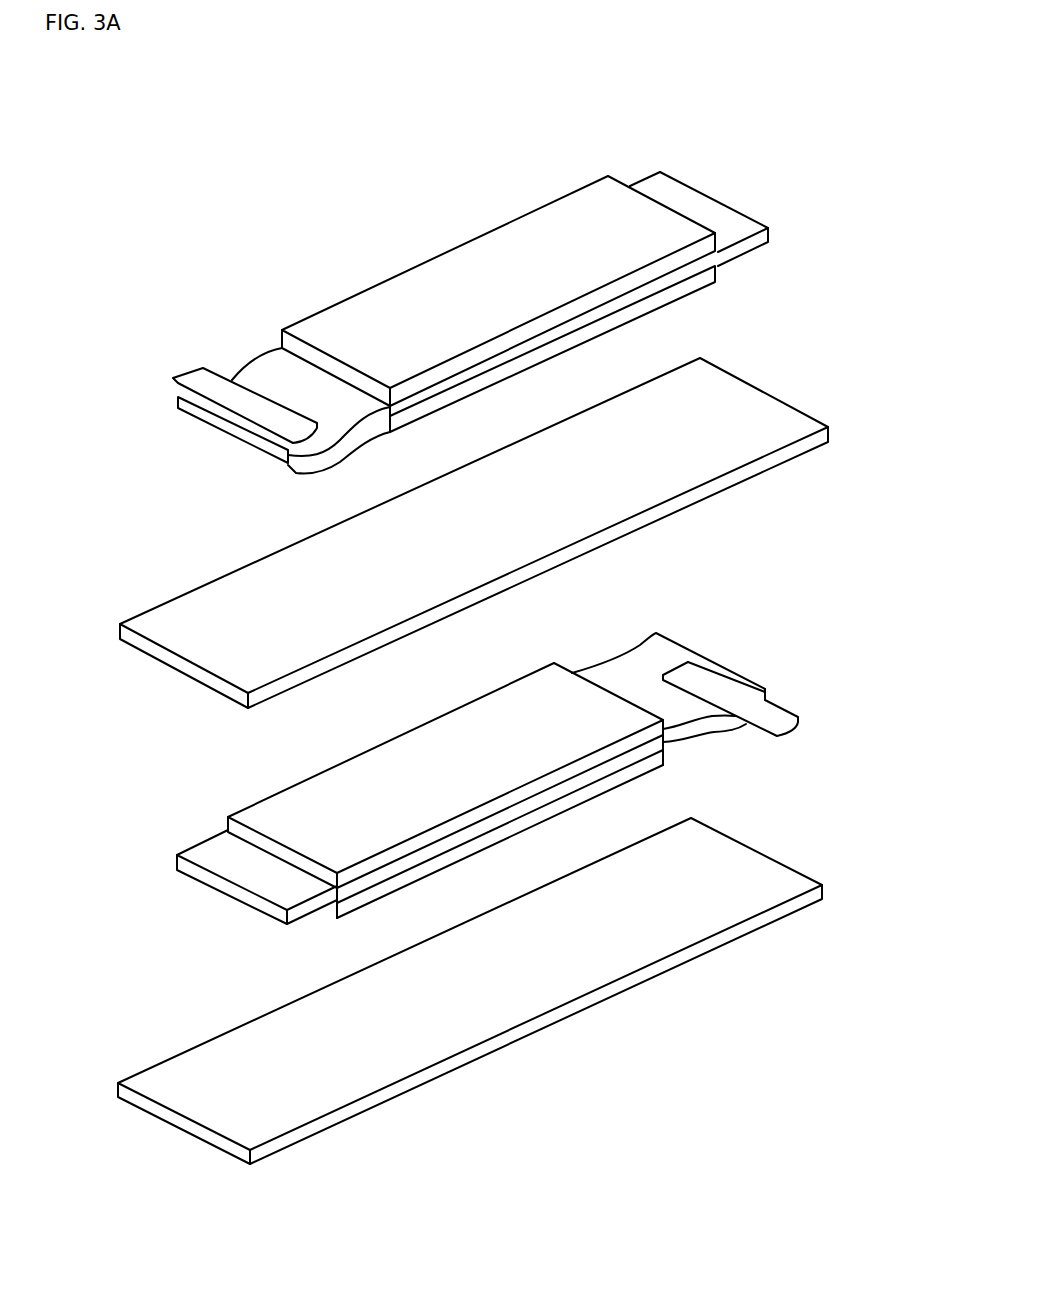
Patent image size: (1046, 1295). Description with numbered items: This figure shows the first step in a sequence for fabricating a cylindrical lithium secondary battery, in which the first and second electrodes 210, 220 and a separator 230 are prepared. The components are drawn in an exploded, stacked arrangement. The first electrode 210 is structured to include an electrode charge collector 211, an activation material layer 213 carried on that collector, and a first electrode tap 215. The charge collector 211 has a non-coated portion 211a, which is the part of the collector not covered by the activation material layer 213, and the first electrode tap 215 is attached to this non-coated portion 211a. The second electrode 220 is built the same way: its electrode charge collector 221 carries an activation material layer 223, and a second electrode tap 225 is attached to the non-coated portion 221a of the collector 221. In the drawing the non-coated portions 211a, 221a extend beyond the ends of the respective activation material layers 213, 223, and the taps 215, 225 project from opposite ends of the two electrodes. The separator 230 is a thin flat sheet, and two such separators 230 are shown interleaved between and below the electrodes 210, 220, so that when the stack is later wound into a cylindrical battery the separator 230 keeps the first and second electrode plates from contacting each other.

The first electrode 210 is at (700, 119).
The electrode charge collector 211 is at (554, 334).
The non-coated portion 211a is at (652, 185).
The activation material layer 213 is at (430, 265).
The first electrode tap 215 is at (200, 374).
The second electrode 220 is at (697, 600).
The electrode charge collector 221 is at (500, 818).
The non-coated portion 221a is at (212, 851).
The activation material layer 223 is at (474, 722).
The second electrode tap 225 is at (782, 710).
The separator 230 is at (176, 609).